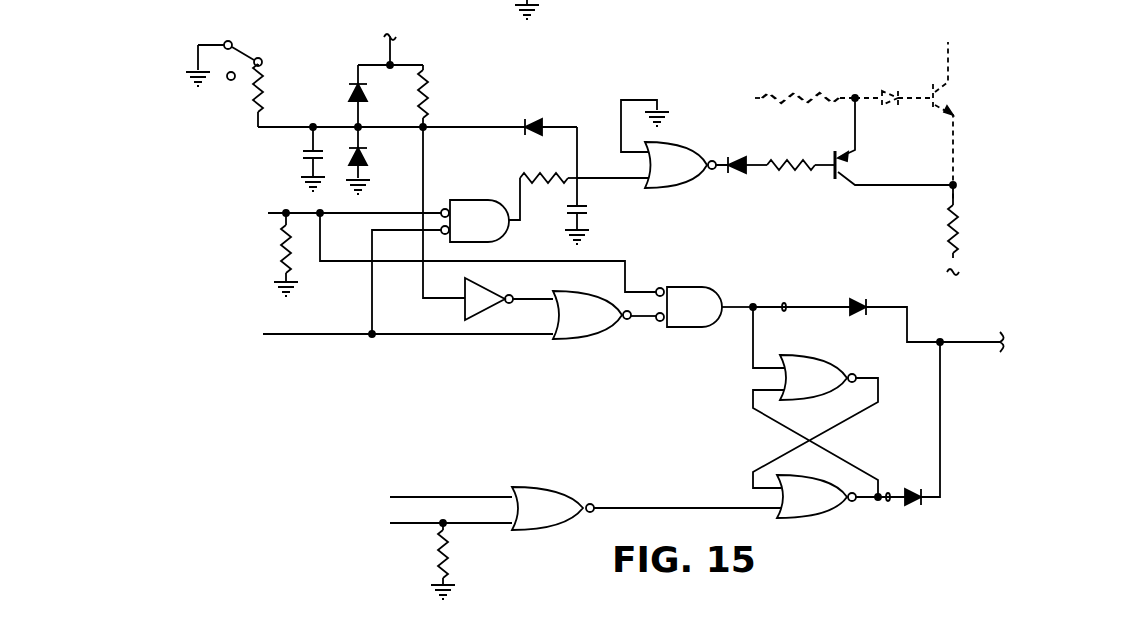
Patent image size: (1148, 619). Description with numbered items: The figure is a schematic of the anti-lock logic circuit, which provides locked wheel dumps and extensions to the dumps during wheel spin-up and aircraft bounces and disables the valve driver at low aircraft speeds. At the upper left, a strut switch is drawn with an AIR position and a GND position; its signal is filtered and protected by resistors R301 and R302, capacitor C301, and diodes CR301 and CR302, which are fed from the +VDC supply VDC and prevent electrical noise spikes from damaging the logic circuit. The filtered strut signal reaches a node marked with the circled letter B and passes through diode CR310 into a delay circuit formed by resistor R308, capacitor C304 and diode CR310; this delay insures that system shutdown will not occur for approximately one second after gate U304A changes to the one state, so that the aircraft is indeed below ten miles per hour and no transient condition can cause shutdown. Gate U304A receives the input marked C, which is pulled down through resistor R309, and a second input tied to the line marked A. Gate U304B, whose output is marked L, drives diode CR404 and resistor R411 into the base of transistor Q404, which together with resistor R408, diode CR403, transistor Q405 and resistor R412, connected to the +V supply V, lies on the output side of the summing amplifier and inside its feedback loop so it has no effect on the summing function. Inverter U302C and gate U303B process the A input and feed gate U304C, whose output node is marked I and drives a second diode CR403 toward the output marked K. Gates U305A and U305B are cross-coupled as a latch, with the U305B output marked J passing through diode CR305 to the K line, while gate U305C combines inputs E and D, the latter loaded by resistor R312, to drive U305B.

The air switch position AIR is at (224, 55).
The ground switch position GND is at (232, 87).
The resistor R301 is at (282, 95).
The resistor R302 is at (447, 96).
The resistor R308 is at (543, 185).
The resistor R309 is at (265, 254).
The resistor R312 is at (466, 561).
The resistor R408 is at (805, 84).
The resistor R411 is at (801, 152).
The resistor R412 is at (977, 223).
The capacitor C301 is at (292, 159).
The capacitor C304 is at (601, 185).
The diode CR301 is at (331, 96).
The diode CR302 is at (384, 160).
The diode CR310 is at (535, 115).
The diode CR403 is at (885, 189).
The diode CR404 is at (737, 153).
The diode CR305 is at (928, 436).
The transistor Q404 is at (895, 141).
The transistor Q405 is at (968, 121).
The inverter U302C is at (509, 289).
The OR gate U303B is at (604, 315).
The gate U304A is at (475, 221).
The NOR gate U304B is at (646, 144).
The NAND gate U304C is at (704, 307).
The NOR gate U305A is at (815, 402).
The NOR gate U305B is at (841, 497).
The NOR gate U305C is at (646, 508).
The +VDC supply VDC is at (390, 38).
The +V supply V is at (953, 284).
The terminal A is at (397, 287).
The terminal B is at (473, 112).
The terminal C is at (343, 213).
The terminal D is at (440, 523).
The terminal E is at (440, 497).
The terminal I is at (785, 302).
The terminal J is at (886, 503).
The terminal K is at (1017, 342).
The terminal L is at (717, 170).